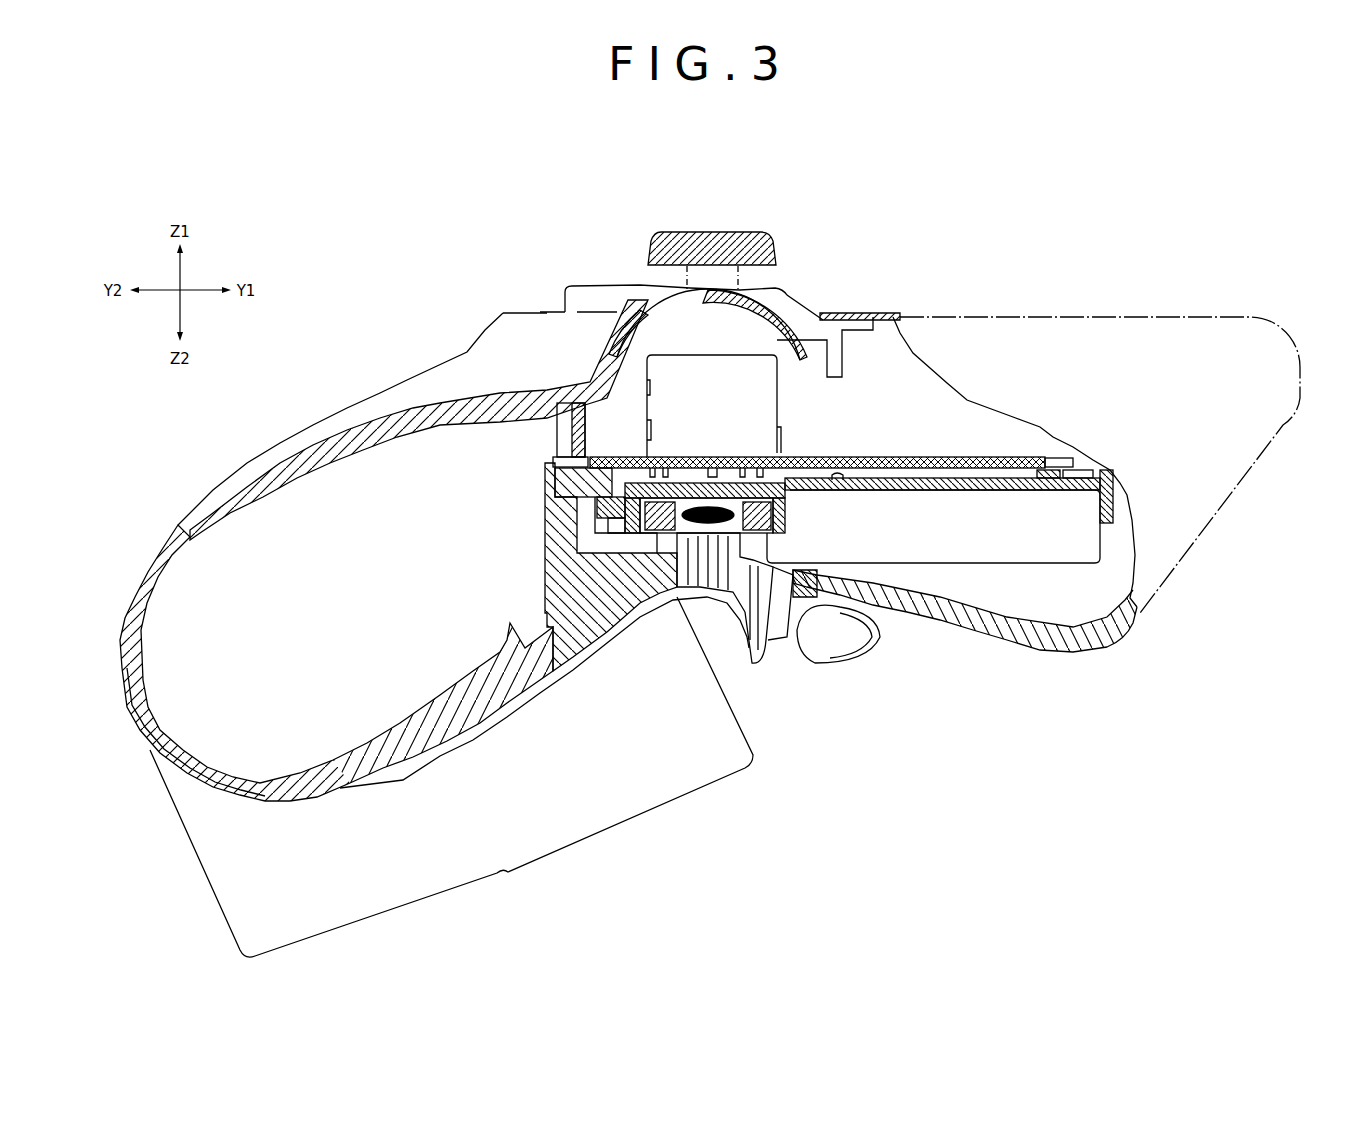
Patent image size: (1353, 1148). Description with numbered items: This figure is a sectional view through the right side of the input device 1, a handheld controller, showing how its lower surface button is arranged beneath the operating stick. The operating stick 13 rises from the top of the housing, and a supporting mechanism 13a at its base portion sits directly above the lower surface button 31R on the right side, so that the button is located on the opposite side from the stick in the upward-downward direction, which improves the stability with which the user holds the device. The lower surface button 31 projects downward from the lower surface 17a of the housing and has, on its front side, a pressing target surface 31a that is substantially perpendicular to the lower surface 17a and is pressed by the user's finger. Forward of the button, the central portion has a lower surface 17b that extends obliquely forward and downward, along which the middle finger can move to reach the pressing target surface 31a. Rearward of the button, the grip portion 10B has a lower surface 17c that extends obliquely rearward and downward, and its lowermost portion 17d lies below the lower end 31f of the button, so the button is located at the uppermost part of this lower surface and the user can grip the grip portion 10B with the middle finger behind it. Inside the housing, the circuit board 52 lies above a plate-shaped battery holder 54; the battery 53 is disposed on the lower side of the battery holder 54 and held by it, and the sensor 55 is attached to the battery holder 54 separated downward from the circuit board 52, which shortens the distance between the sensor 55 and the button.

The input device 1 is at (903, 238).
The operating stick 13 is at (762, 218).
The supporting mechanism 13a is at (770, 397).
The circuit board 52 is at (870, 457).
The battery 53 is at (922, 565).
The battery holder 54 is at (923, 478).
The sensor 55 is at (729, 482).
The lower surface button on the right side 31R is at (687, 614).
The lower surface button 31 is at (727, 618).
The pressing target surface 31a is at (787, 638).
The lower end 31f is at (757, 666).
The lower surface 17a is at (1050, 655).
The lower surface 17b is at (990, 642).
The lower surface 17c is at (487, 718).
The lowermost portion 17d is at (275, 805).
The grip portion 10B is at (451, 635).